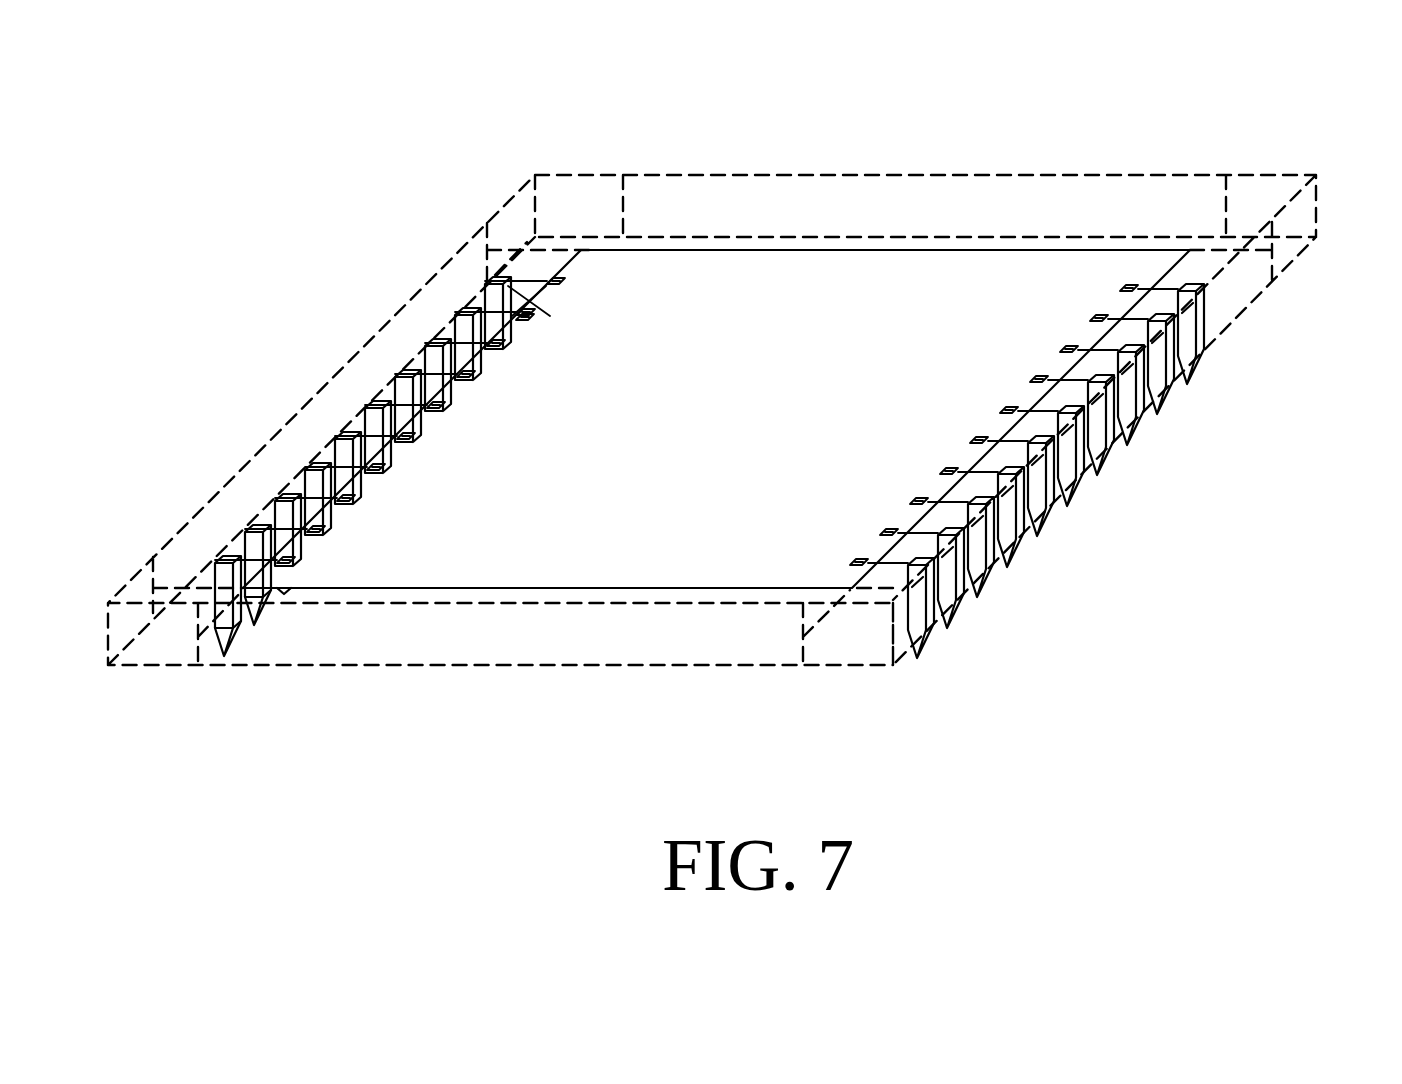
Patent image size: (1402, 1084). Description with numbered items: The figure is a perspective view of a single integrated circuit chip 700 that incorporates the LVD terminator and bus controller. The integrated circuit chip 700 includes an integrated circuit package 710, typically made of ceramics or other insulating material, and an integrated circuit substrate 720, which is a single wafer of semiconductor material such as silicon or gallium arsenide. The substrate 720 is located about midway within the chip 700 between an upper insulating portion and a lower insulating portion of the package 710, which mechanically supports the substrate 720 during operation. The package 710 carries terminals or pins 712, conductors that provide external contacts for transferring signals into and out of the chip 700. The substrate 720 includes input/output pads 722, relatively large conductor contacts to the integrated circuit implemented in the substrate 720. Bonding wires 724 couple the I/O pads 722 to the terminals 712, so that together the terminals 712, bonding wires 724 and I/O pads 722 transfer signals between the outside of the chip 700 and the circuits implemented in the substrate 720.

The integrated circuit chip 700 is at (1083, 89).
The integrated circuit package 710 is at (1313, 212).
The terminals or pins 712 is at (1190, 350).
The integrated circuit substrate 720 is at (924, 262).
The input/output pads 722 is at (568, 284).
The bonding wires 724 is at (536, 302).